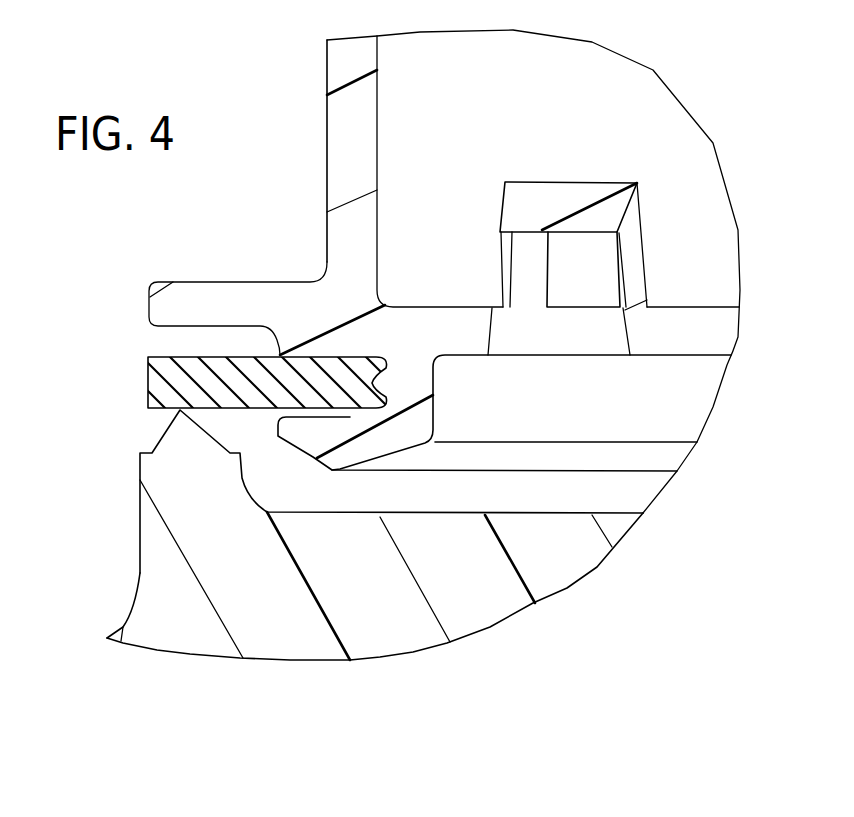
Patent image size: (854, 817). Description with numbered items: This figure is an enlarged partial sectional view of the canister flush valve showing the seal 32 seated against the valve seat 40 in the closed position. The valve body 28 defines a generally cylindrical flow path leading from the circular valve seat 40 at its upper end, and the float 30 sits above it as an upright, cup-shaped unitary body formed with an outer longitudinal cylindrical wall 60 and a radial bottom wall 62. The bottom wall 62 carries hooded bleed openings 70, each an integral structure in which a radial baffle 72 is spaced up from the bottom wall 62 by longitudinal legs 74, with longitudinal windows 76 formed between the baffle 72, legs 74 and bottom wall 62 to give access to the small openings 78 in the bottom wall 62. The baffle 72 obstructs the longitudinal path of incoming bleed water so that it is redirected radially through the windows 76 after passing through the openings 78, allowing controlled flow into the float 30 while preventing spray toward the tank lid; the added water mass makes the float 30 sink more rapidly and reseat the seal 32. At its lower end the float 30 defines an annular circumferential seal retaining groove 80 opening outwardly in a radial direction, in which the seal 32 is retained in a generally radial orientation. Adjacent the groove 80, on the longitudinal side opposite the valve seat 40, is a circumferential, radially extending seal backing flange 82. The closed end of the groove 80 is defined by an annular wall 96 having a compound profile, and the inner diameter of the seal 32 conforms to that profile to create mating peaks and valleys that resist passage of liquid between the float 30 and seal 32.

The valve body 28 is at (378, 634).
The float 30 is at (322, 68).
The seal 32 is at (177, 380).
The valve seat 40 is at (167, 428).
The outer longitudinal cylindrical wall 60 is at (357, 145).
The bottom wall 62 is at (672, 343).
The hooded bleed openings 70 is at (561, 203).
The radial baffle 72 is at (533, 192).
The longitudinal legs 74 is at (525, 274).
The longitudinal windows 76 is at (594, 287).
The small openings 78 is at (493, 335).
The seal retaining groove 80 is at (298, 424).
The seal backing flange 82 is at (213, 293).
The annular wall 96 is at (424, 387).